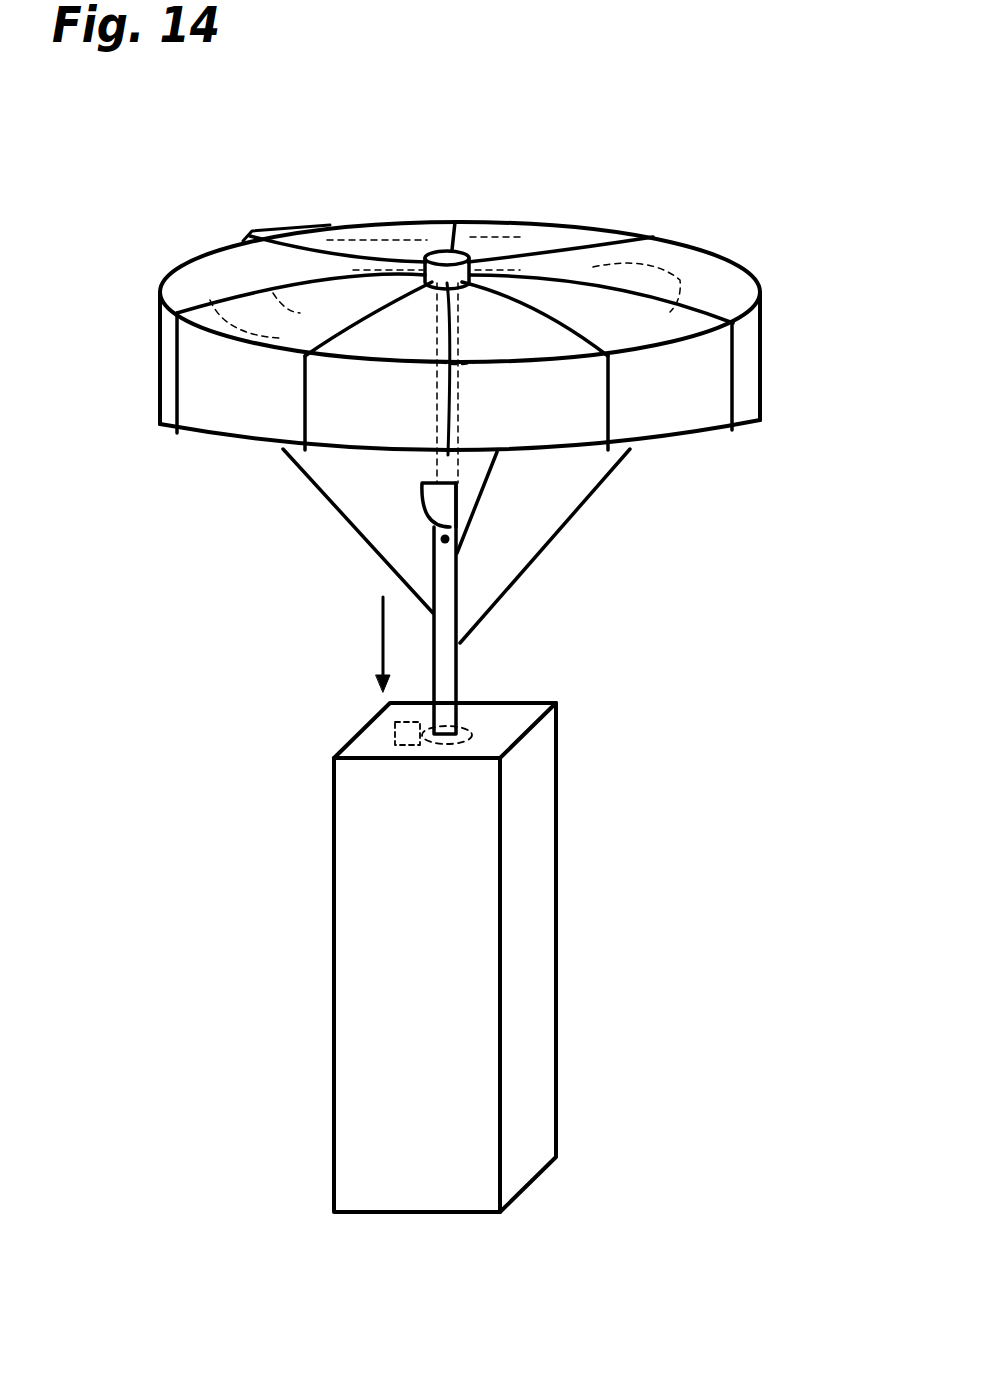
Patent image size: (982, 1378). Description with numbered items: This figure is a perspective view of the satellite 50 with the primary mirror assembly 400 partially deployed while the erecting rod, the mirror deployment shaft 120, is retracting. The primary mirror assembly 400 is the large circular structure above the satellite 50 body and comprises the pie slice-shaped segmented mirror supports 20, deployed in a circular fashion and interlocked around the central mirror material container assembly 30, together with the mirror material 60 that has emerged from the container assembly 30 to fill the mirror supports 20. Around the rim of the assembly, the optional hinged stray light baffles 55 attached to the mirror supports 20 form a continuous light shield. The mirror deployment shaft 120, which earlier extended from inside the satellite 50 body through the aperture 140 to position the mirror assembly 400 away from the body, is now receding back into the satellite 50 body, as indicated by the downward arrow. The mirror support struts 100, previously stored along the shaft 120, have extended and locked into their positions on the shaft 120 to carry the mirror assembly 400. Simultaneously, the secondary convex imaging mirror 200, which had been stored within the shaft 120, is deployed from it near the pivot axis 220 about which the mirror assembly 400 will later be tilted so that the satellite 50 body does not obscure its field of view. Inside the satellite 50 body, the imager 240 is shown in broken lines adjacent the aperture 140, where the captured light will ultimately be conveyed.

The primary mirror assembly 400 is at (150, 313).
The hinged stray light baffles 55 is at (454, 381).
The segmented mirror supports 20 is at (455, 324).
The mirror material container assembly 30 is at (555, 228).
The mirror material 60 is at (385, 244).
The mirror support struts 100 is at (348, 518).
The secondary convex imaging mirror 200 is at (433, 510).
The pivot axis 220 is at (457, 541).
The mirror deployment shaft 120 is at (447, 670).
The aperture 140 is at (478, 722).
The imager 240 is at (393, 732).
The satellite 50 is at (272, 1012).